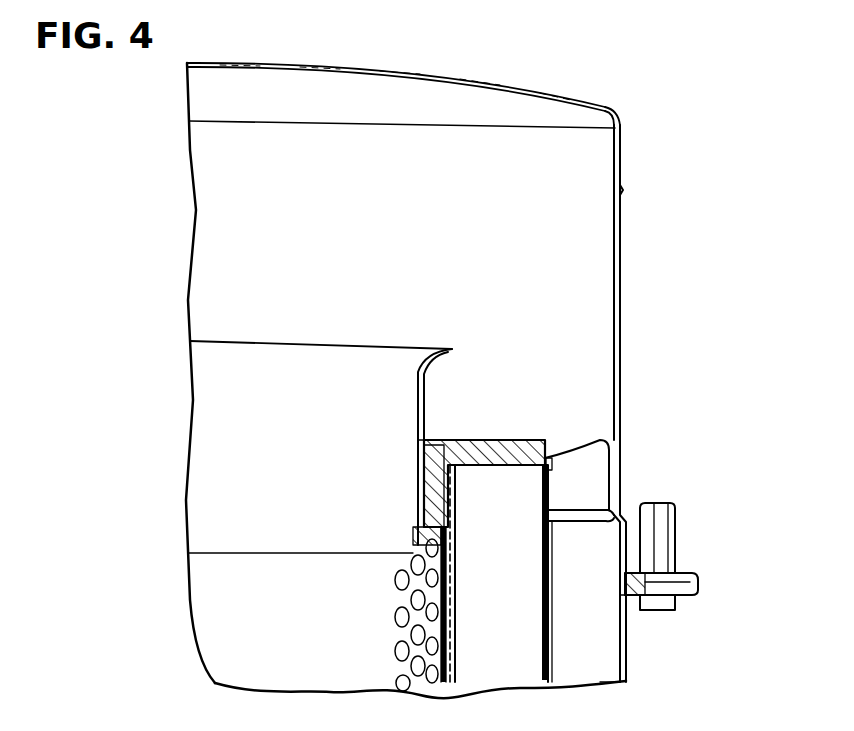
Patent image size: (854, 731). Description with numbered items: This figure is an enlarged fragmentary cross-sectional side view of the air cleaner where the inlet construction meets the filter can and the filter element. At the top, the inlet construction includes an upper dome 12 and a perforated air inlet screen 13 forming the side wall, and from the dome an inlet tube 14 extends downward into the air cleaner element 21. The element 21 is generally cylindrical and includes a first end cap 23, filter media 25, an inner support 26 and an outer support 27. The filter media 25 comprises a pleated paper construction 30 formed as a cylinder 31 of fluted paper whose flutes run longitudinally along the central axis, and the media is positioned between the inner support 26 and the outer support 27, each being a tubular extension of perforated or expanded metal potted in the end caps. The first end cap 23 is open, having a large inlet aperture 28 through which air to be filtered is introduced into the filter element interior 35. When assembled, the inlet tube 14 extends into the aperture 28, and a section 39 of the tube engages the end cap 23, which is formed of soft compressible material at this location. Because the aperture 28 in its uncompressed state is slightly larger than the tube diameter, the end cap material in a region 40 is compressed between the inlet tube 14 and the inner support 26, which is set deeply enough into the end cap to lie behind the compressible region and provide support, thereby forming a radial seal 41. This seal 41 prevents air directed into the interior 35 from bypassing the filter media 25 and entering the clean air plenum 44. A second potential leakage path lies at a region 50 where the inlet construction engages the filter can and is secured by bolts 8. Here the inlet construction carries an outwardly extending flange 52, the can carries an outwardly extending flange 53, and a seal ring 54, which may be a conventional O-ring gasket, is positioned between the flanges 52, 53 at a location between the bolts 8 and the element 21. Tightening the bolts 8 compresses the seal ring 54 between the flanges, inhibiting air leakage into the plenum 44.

The bolts 8 is at (678, 600).
The upper dome 12 is at (447, 82).
The perforated air inlet screen 13 is at (622, 232).
The inlet tube 14 is at (418, 358).
The air cleaner element 21 is at (598, 438).
The first end cap 23 is at (482, 450).
The filter media 25 is at (526, 517).
The inner support 26 is at (452, 580).
The outer support 27 is at (553, 558).
The inlet aperture 28 is at (432, 437).
The pleated paper construction 30 is at (553, 632).
The cylinder 31 is at (533, 585).
The filter element interior 35 is at (449, 619).
The section 39 is at (402, 573).
The region 40 is at (423, 503).
The seal 41 is at (412, 468).
The clean air plenum 44 is at (612, 650).
The region 50 is at (632, 530).
The flange 52 is at (687, 573).
The flange 53 is at (625, 592).
The seal ring 54 is at (640, 577).